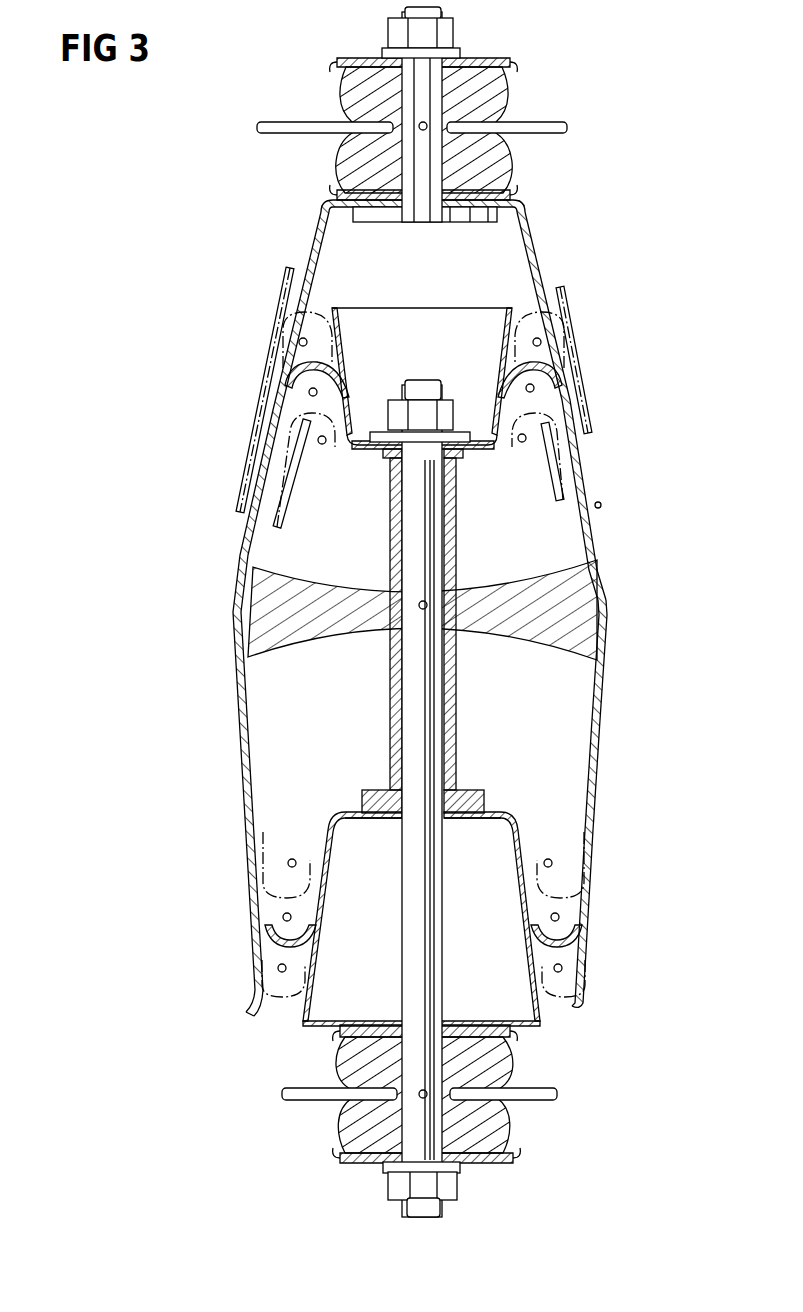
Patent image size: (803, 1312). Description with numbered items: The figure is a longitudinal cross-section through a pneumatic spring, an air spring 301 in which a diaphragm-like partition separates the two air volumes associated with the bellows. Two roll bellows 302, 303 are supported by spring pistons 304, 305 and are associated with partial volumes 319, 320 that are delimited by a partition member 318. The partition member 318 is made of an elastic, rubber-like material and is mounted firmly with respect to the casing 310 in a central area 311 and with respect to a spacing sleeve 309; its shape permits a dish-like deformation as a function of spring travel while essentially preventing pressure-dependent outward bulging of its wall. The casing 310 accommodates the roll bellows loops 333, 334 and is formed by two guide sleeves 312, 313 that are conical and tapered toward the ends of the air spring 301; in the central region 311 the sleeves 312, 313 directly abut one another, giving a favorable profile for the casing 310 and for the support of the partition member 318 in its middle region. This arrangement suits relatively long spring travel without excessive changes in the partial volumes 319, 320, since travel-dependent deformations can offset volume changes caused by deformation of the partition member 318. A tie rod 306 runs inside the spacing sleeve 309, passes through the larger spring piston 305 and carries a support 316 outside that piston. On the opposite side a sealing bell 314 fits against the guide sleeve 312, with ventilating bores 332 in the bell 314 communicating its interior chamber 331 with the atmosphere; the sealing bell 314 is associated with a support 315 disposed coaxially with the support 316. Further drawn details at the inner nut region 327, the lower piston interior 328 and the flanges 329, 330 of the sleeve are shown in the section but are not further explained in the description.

The air spring 301 is at (238, 547).
The roll bellows 302 is at (588, 532).
The roll bellows 303 is at (599, 794).
The spring piston 304 is at (350, 402).
The spring piston 305 is at (334, 850).
The tie rod 306 is at (424, 586).
The spacing sleeve 309 is at (448, 693).
The casing 310 is at (606, 684).
The central area 311 is at (622, 787).
The guide sleeve 312 is at (566, 440).
The guide sleeve 313 is at (596, 830).
The sealing bell 314 is at (550, 252).
The support 315 is at (502, 94).
The support 316 is at (511, 1081).
The partition member 318 is at (334, 615).
The partial volume 319 is at (518, 480).
The partial volume 320 is at (533, 727).
The inner nut 327 is at (497, 366).
The lower cup interior 328 is at (528, 925).
The right flange 329 is at (484, 857).
The left flange 330 is at (384, 803).
The interior chamber 331 is at (458, 281).
The ventilating bores 332 is at (532, 218).
The roll bellows loop 333 is at (528, 354).
The roll bellows loop 334 is at (578, 953).